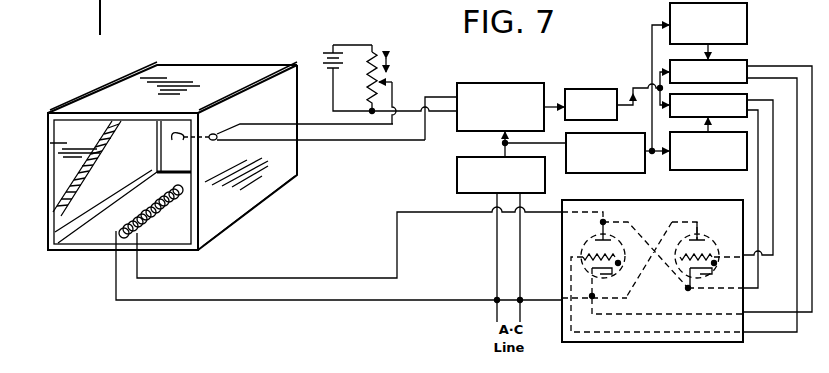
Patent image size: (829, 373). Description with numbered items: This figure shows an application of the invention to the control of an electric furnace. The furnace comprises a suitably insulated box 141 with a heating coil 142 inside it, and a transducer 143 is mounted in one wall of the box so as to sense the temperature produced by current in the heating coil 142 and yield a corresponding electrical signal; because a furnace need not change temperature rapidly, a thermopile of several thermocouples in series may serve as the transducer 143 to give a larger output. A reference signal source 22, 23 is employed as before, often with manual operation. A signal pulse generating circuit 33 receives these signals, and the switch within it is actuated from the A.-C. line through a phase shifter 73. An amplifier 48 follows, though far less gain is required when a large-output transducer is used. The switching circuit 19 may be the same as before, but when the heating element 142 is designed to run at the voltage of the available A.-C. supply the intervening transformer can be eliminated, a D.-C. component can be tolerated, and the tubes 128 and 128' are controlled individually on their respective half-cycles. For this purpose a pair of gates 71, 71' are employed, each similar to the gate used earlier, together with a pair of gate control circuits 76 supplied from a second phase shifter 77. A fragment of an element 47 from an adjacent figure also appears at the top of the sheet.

The element of adjacent figure (partially shown) 47 is at (229, 5).
The insulated box 141 is at (207, 78).
The transducer 143 is at (178, 142).
The heating coil 142 is at (165, 204).
The reference signal source 23 is at (324, 64).
The reference signal source 22 is at (376, 60).
The signal pulse generating circuit 33 is at (509, 63).
The amplifier 48 is at (592, 89).
The gate control circuit 76 is at (669, 10).
The gate 71' is at (728, 63).
The gate 71 is at (724, 99).
The phase shifter 73 is at (457, 178).
The phase shifter 77 is at (606, 173).
The switching circuit 19 is at (652, 259).
The tube 128' is at (593, 259).
The tube 128 is at (700, 250).